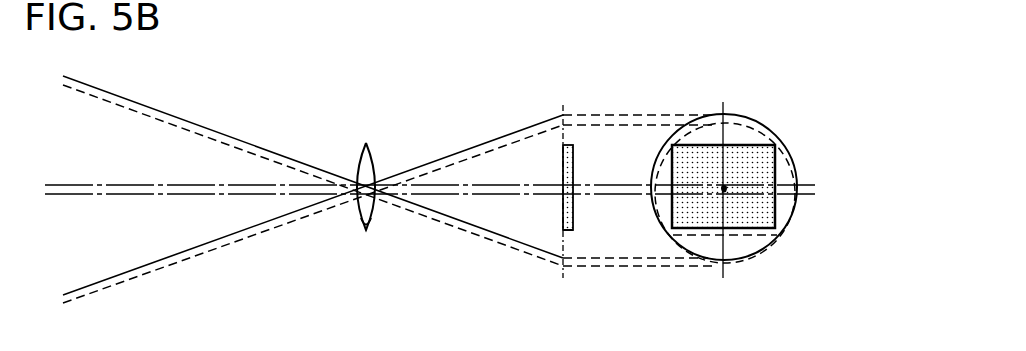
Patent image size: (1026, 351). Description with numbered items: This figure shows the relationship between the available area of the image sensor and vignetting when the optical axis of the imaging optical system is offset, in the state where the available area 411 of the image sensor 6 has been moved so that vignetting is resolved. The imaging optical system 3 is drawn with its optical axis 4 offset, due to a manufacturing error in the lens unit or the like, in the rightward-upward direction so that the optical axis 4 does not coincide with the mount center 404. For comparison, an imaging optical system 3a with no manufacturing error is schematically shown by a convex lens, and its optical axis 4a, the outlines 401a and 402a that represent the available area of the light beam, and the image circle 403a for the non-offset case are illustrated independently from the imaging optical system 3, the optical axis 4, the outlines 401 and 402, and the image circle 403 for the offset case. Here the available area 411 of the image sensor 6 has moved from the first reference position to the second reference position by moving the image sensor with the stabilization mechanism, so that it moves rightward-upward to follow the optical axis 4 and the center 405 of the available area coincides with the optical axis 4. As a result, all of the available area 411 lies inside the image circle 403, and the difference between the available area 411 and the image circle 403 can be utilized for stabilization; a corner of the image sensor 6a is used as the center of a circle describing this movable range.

The imaging optical system 3 is at (366, 142).
The imaging optical system 3a is at (366, 231).
The optical axis 4 is at (141, 184).
The optical axis 4a is at (141, 195).
The image sensor 6 is at (731, 134).
The image sensor 6a is at (566, 232).
The outline 401 is at (162, 111).
The outline 401a is at (237, 147).
The outline 402 is at (153, 264).
The outline 402a is at (238, 242).
The image circle 403 is at (736, 114).
The image circle 403a is at (748, 125).
The mount center 404 is at (468, 195).
The center of the available area 405 is at (468, 185).
The available area 411 is at (568, 143).